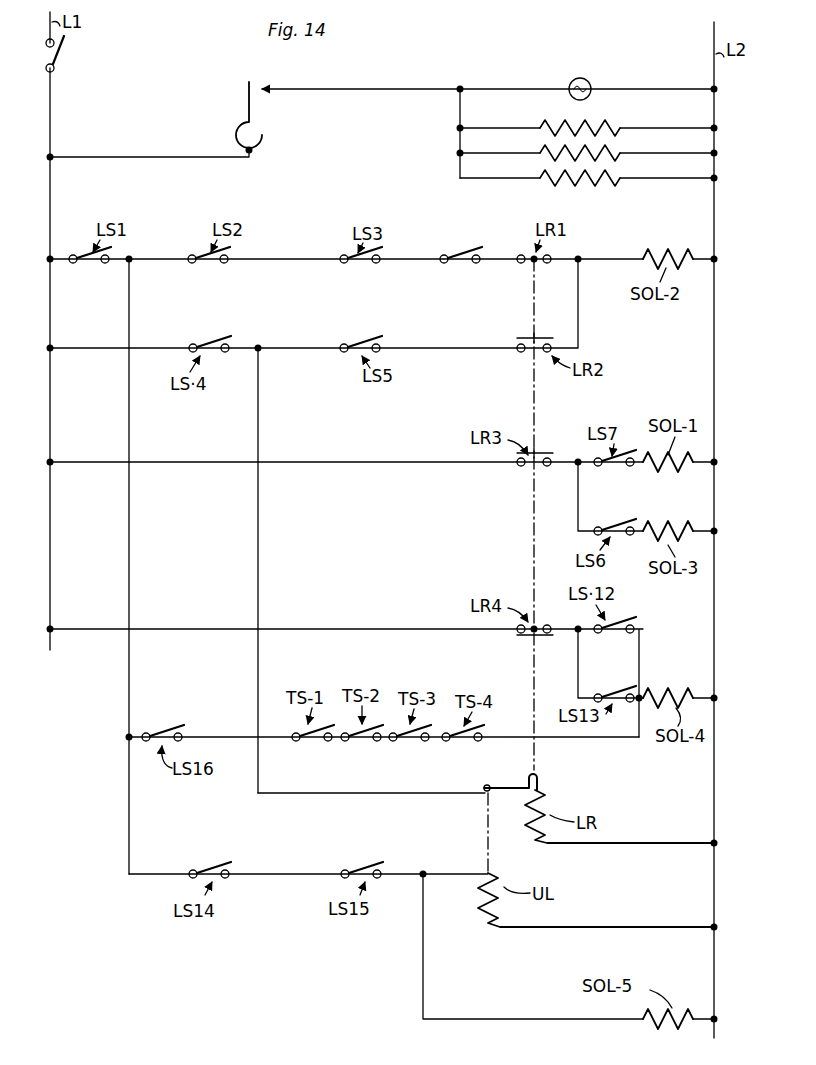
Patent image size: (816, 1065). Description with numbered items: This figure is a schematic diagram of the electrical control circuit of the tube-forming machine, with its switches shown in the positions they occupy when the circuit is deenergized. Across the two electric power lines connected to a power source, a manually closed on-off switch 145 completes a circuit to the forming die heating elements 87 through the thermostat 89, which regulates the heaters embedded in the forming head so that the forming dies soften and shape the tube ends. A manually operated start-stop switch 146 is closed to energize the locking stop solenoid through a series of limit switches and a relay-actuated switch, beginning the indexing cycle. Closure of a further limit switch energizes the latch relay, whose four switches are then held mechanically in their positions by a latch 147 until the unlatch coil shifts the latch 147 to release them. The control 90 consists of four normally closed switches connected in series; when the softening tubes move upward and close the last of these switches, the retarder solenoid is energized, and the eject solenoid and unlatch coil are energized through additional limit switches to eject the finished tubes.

The on-off switch 145 is at (64, 62).
The thermostat 89 is at (247, 120).
The heating elements 87 is at (540, 153).
The start-stop switch 146 is at (466, 234).
The latch 147 is at (506, 784).
The control 90 is at (378, 748).